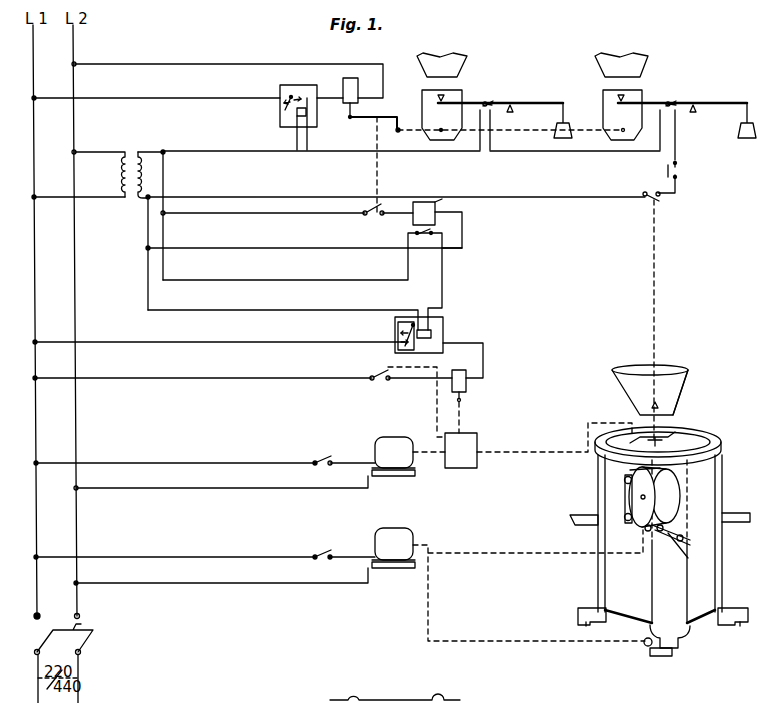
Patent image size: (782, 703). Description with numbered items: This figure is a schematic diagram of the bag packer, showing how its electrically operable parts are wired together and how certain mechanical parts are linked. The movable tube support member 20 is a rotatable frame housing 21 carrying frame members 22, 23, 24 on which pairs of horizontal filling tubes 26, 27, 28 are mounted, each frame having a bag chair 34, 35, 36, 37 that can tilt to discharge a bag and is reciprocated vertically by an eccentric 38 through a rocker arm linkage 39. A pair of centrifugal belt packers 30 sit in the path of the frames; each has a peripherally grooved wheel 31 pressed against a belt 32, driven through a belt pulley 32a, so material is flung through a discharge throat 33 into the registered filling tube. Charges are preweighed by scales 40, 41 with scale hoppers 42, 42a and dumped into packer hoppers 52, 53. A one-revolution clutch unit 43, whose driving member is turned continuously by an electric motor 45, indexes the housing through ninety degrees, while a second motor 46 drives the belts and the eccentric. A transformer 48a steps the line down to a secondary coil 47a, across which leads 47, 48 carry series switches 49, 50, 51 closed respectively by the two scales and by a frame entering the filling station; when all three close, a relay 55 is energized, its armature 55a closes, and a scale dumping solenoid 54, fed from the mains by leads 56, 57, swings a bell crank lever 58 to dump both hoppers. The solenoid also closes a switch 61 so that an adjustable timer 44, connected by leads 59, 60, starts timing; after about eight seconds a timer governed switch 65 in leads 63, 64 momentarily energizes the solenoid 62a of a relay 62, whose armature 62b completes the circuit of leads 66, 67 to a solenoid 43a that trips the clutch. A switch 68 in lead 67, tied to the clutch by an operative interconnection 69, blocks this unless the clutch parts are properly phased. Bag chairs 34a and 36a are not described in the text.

The movable tube support member 20 is at (662, 525).
The rotatable frame housing 21 is at (712, 440).
The frame member 22 is at (597, 565).
The frame member 23 is at (689, 583).
The frame member 24 is at (723, 500).
The filling tubes 26 is at (570, 521).
The filling tubes 27 is at (680, 554).
The filling tubes 28 is at (735, 515).
The centrifugal belt packer 30 is at (670, 503).
The peripherally grooved wheel 31 is at (636, 477).
The belt 32 is at (625, 495).
The belt pulley 32a is at (645, 532).
The discharge throat 33 is at (668, 528).
The bag chair 34 is at (578, 614).
The left foot pad 34a is at (590, 626).
The bag chair 35 is at (688, 636).
The bag chair 36 is at (748, 615).
The right foot pad 36a is at (734, 626).
The bag chair 37 is at (462, 700).
The eccentric 38 is at (645, 645).
The rocker arm linkage 39 is at (660, 656).
The scale 40 is at (525, 89).
The scale 41 is at (712, 90).
The scale hopper 42 is at (422, 105).
The scale hopper 42a is at (604, 103).
The one-revolution clutch unit 43 is at (477, 438).
The solenoid 43a is at (466, 386).
The adjustable timer 44 is at (413, 218).
The electric motor 45 is at (391, 440).
The second motor 46 is at (391, 532).
The lead 47 is at (450, 161).
The secondary coil 47a is at (134, 197).
The lead 48 is at (238, 194).
The transformer 48a is at (140, 148).
The switch 49 is at (485, 100).
The switch 50 is at (667, 101).
The switch 51 is at (650, 185).
The packer hopper 52 is at (636, 387).
The packer hopper 53 is at (678, 383).
The scale dumping solenoid 54 is at (347, 102).
The relay 55 is at (282, 118).
The armature 55a is at (285, 104).
The lead 56 is at (216, 70).
The lead 57 is at (203, 102).
The bell crank lever 58 is at (356, 117).
The lead 59 is at (165, 180).
The lead 60 is at (239, 256).
The switch 61 is at (366, 218).
The relay 62 is at (446, 320).
The solenoid 62a is at (433, 334).
The armature 62b is at (404, 346).
The lead 63 is at (239, 290).
The lead 64 is at (239, 319).
The timer governed switch 65 is at (420, 242).
The lead 66 is at (239, 352).
The lead 67 is at (239, 388).
The switch 68 is at (375, 384).
The operative interconnection 69 is at (437, 388).